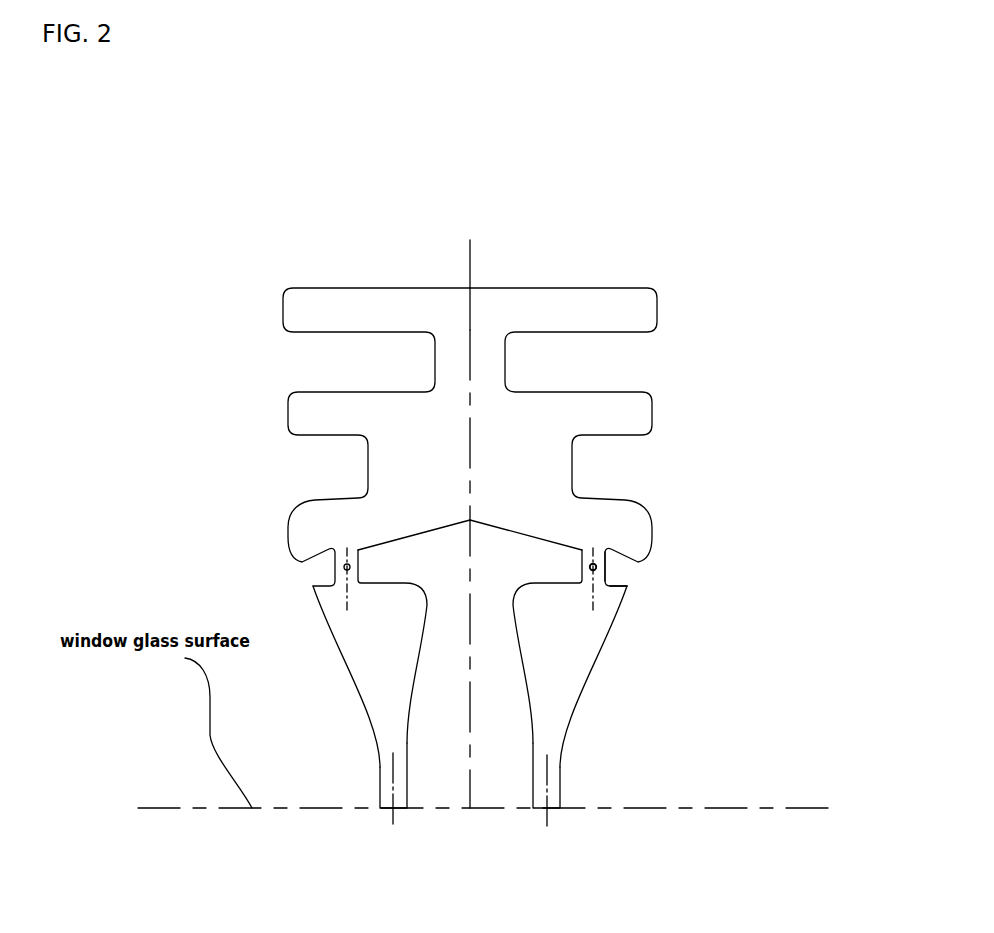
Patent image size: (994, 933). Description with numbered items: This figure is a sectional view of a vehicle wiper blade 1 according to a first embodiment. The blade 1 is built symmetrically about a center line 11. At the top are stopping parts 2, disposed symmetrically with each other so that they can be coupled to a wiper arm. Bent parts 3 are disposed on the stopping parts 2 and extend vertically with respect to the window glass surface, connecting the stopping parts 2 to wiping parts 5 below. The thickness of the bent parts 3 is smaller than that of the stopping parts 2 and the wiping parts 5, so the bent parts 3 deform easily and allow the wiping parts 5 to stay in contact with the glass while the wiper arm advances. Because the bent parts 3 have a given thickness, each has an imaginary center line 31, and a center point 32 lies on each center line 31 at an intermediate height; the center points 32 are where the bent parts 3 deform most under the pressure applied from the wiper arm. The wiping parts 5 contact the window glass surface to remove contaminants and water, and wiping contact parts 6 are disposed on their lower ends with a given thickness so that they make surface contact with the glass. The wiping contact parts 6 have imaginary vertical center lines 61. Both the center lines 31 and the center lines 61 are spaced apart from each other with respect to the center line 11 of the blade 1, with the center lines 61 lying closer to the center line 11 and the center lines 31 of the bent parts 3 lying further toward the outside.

The vehicle wiper blade 1 is at (482, 142).
The center line of the blade 11 is at (470, 317).
The stopping parts 2 is at (683, 308).
The bent parts 3 is at (333, 568).
The center lines of the bent parts 31 is at (595, 598).
The center points 32 is at (594, 568).
The wiping parts 5 is at (340, 695).
The wiping contact parts 6 is at (386, 808).
The center lines of the wiping contact parts 61 is at (393, 790).